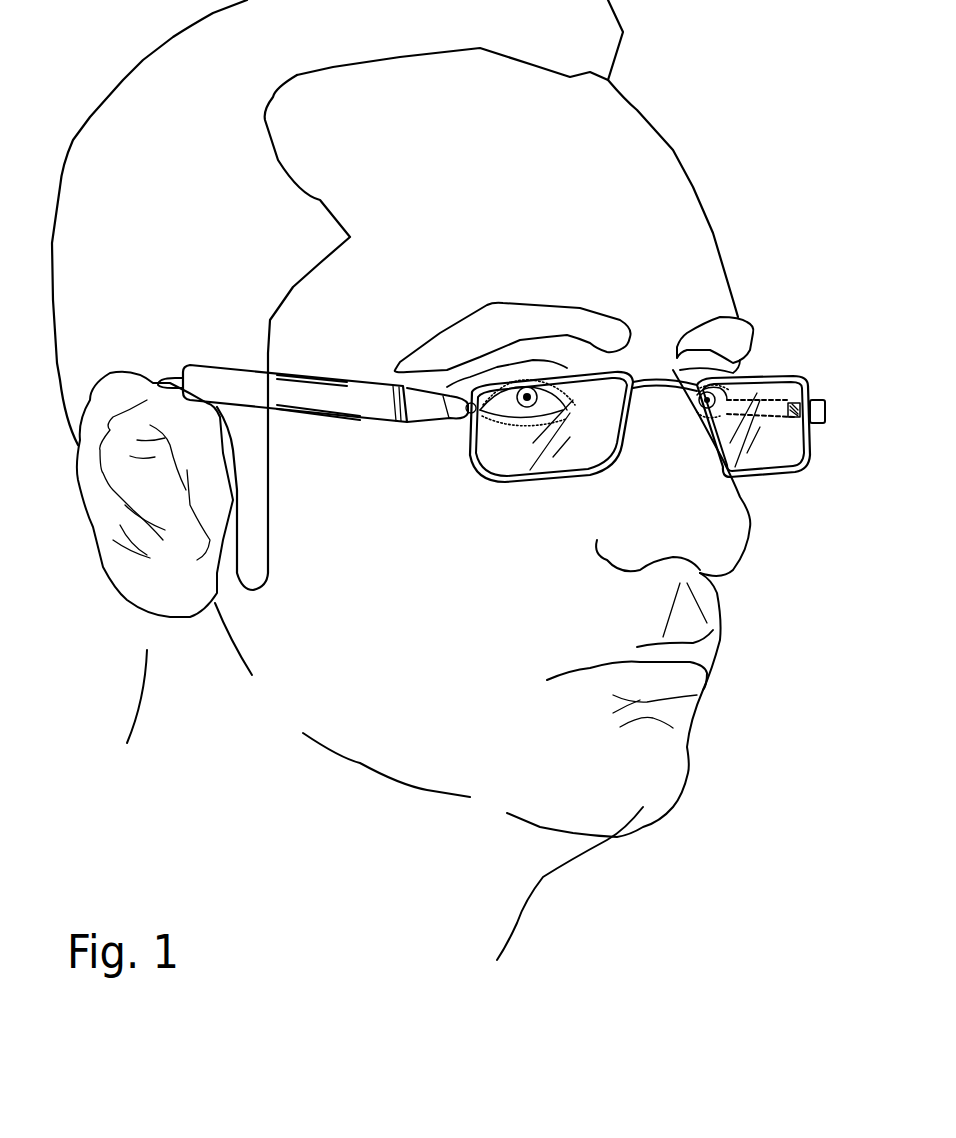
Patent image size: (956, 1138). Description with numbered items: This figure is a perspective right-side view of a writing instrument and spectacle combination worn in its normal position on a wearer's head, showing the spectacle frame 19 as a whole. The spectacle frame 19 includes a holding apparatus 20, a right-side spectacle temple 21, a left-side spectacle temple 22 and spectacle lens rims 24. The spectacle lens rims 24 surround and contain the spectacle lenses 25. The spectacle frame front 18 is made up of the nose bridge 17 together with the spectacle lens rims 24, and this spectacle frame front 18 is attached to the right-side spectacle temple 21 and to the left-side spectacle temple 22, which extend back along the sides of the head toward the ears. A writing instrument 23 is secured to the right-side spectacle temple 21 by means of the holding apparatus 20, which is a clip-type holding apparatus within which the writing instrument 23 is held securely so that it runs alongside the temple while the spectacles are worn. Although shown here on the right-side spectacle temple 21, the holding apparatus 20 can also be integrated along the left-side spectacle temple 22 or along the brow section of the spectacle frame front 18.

The nose bridge 17 is at (662, 389).
The spectacle frame front 18 is at (644, 419).
The spectacle frame 19 is at (455, 580).
The holding apparatus 20 is at (329, 388).
The right-side spectacle temple 21 is at (175, 377).
The left-side spectacle temple 22 is at (823, 400).
The writing instrument 23 is at (373, 408).
The spectacle lens rims 24 is at (513, 483).
The spectacle lenses 25 is at (507, 457).